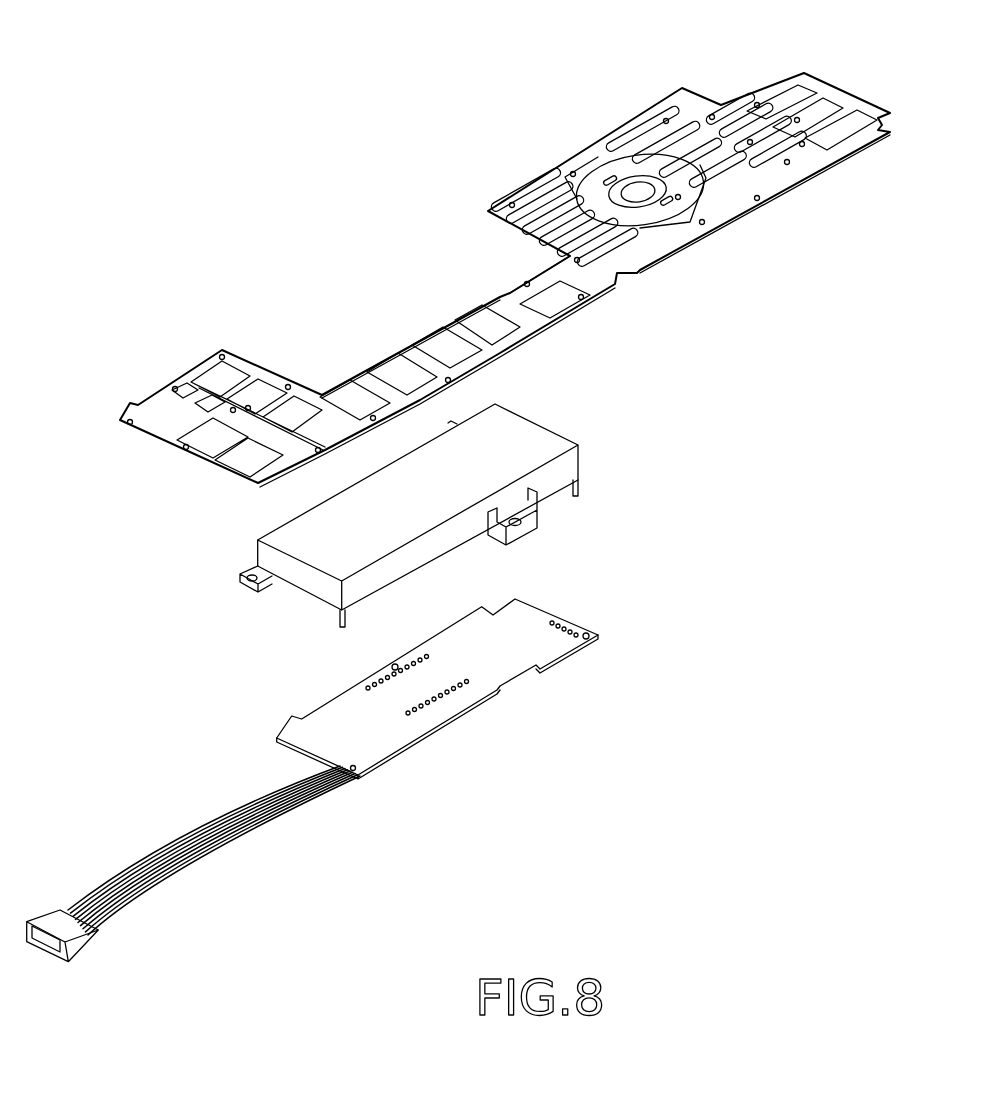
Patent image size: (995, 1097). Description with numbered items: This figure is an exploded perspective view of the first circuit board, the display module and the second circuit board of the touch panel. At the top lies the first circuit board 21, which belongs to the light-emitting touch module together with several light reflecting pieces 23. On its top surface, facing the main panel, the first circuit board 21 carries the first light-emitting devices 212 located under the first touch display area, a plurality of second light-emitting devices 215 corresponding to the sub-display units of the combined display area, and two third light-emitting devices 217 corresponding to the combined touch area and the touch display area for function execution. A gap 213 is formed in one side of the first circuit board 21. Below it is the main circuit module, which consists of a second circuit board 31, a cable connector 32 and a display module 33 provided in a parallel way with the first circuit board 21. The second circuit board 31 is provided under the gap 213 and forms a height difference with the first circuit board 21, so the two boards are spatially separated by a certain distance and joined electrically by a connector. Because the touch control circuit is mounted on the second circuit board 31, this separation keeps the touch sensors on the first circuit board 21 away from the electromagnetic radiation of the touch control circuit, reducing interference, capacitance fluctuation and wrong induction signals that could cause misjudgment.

The first circuit board 21 is at (153, 417).
The light reflecting pieces 23 is at (637, 188).
The first light-emitting devices 212 is at (570, 307).
The gap 213 is at (343, 318).
The second light-emitting devices 215 is at (606, 184).
The third light-emitting devices 217 is at (667, 205).
The second circuit board 31 is at (545, 643).
The cable connector 32 is at (57, 920).
The display module 33 is at (498, 433).